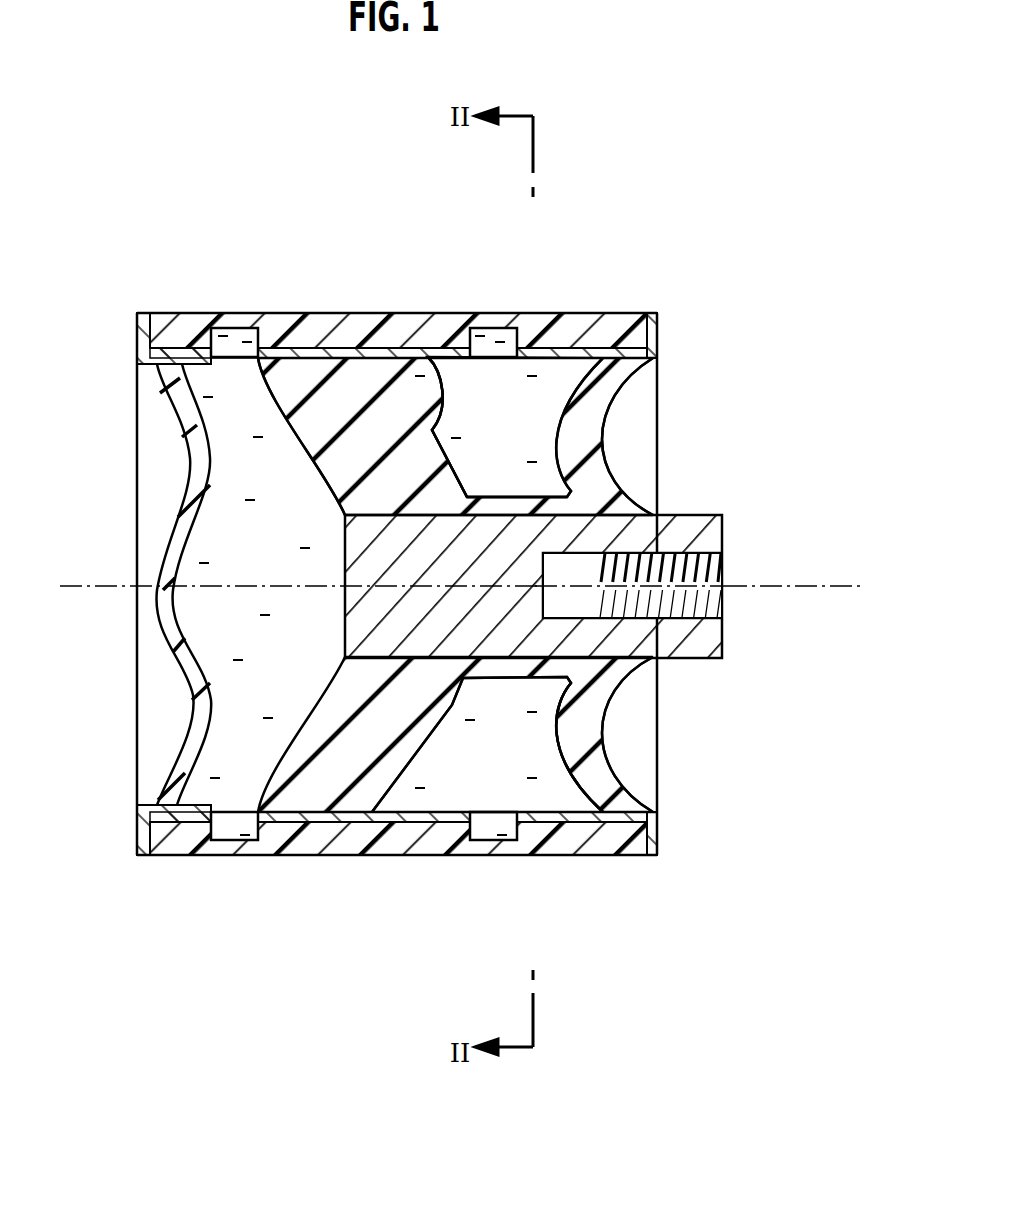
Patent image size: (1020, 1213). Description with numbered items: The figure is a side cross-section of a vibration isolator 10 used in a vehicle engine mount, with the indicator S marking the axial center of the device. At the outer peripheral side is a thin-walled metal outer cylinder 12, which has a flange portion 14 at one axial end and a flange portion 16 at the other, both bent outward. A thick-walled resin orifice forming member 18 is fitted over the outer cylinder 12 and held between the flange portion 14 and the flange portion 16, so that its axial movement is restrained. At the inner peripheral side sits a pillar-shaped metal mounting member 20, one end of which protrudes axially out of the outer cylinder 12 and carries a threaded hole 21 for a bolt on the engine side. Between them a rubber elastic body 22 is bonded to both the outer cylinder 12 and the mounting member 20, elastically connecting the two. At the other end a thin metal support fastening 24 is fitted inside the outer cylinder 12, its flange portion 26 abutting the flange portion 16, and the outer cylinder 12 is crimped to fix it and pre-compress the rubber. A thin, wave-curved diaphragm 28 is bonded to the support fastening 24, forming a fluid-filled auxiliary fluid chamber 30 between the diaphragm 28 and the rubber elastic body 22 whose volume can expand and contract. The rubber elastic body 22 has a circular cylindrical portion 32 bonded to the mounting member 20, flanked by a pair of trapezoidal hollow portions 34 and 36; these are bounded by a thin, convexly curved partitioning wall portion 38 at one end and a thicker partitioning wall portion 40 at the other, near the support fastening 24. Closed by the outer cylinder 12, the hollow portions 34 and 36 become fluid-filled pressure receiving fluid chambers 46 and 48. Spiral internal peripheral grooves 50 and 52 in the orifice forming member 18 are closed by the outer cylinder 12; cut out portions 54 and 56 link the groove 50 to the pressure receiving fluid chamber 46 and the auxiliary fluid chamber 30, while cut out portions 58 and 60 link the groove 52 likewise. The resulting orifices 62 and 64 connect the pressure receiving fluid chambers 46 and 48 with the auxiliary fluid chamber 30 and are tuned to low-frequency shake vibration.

The vibration isolator 10 is at (722, 198).
The outer cylinder 12 is at (398, 825).
The flange portion 14 is at (656, 332).
The flange portion 16 is at (150, 323).
The orifice forming member 18 is at (612, 320).
The mounting member 20 is at (722, 515).
The threaded hole 21 is at (687, 616).
The rubber elastic body 22 is at (623, 460).
The support fastening 24 is at (150, 366).
The flange portion 26 is at (137, 832).
The diaphragm 28 is at (168, 645).
The auxiliary fluid chamber 30 is at (217, 536).
The circular cylindrical portion 32 is at (498, 497).
The hollow portion 34 is at (433, 393).
The hollow portion 36 is at (547, 752).
The partitioning wall portion 38 is at (583, 723).
The partitioning wall portion 40 is at (333, 472).
The pressure receiving fluid chamber 46 is at (567, 340).
The pressure receiving fluid chamber 48 is at (440, 812).
The internal peripheral groove 50 is at (498, 345).
The internal peripheral groove 52 is at (240, 342).
The cut out portion 54 is at (503, 358).
The cut out portion 56 is at (231, 817).
The cut out portion 58 is at (488, 813).
The cut out portion 60 is at (218, 355).
The orifice 62 is at (227, 833).
The orifice 64 is at (488, 833).
The axial center S is at (810, 586).